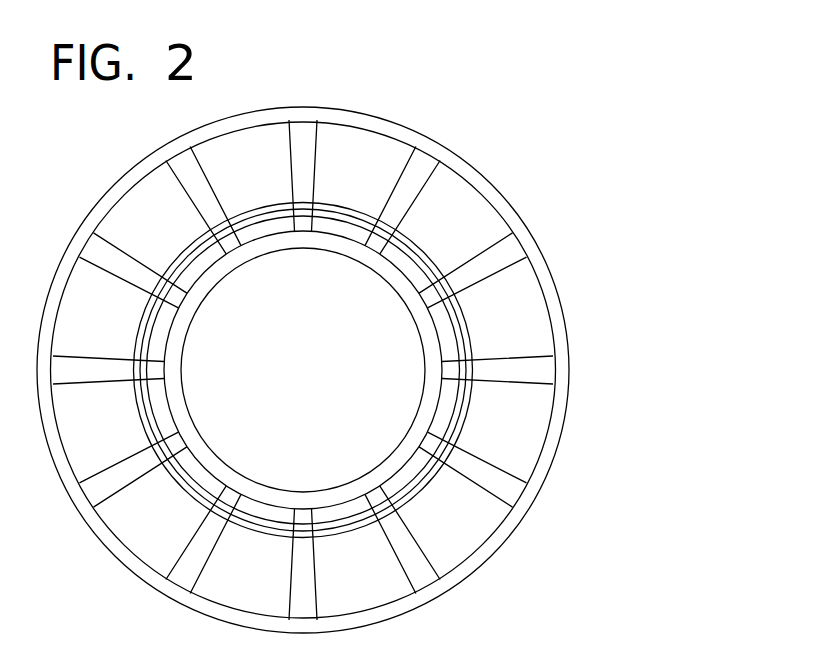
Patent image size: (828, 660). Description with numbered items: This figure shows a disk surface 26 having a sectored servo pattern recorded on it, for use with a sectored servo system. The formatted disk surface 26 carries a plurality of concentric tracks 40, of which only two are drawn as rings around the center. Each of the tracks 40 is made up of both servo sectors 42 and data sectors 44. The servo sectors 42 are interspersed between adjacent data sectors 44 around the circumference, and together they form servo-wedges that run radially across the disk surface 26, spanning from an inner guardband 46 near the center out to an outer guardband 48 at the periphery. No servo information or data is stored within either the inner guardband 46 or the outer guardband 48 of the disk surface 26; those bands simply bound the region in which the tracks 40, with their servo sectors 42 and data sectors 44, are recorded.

The disk surface 26 is at (543, 198).
The concentric tracks 40 is at (457, 414).
The servo sectors 42 is at (507, 253).
The data sectors 44 is at (460, 208).
The inner guardband 46 is at (388, 275).
The outer guardband 48 is at (560, 413).